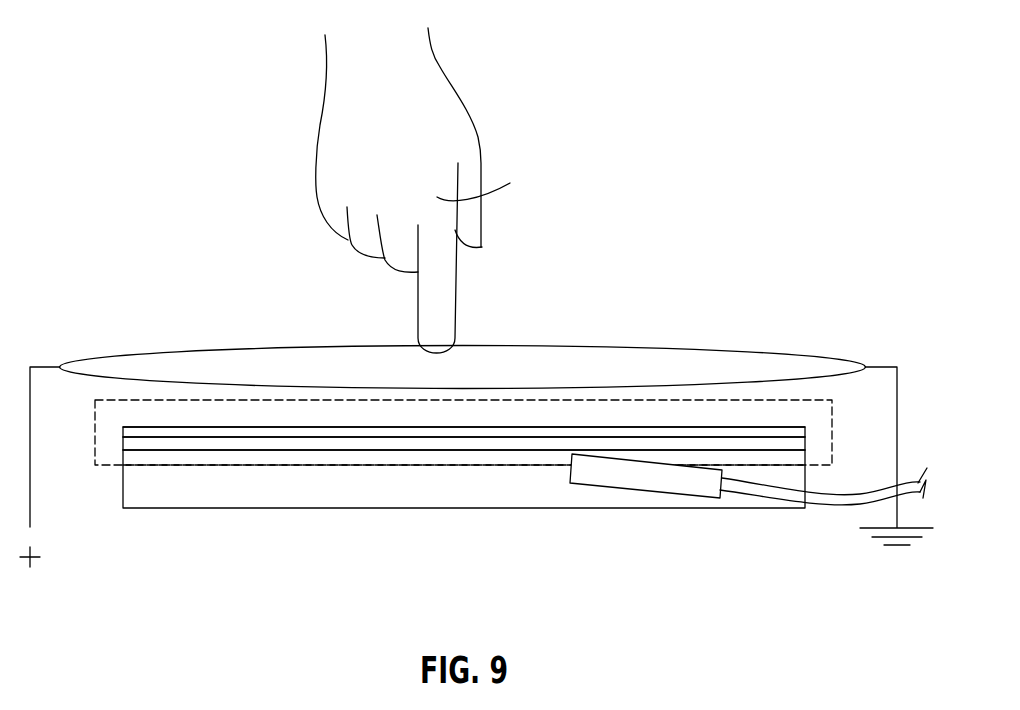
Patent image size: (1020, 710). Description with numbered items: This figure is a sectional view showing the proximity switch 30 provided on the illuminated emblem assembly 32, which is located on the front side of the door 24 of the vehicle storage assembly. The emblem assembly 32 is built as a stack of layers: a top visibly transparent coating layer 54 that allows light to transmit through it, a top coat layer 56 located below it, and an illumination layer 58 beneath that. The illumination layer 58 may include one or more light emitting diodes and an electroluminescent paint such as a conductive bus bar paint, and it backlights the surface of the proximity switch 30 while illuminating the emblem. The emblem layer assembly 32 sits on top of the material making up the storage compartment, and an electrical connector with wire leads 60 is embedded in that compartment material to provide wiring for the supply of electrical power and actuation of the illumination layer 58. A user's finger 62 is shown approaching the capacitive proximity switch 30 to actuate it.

The door 24 is at (123, 484).
The proximity switch 30 is at (603, 347).
The illuminated emblem assembly 32 is at (832, 428).
The top visibly transparent coating layer 54 is at (123, 430).
The top coat layer 56 is at (130, 440).
The illumination layer 58 is at (135, 458).
The electrical connector with wire leads 60 is at (650, 478).
The finger 62 is at (482, 200).